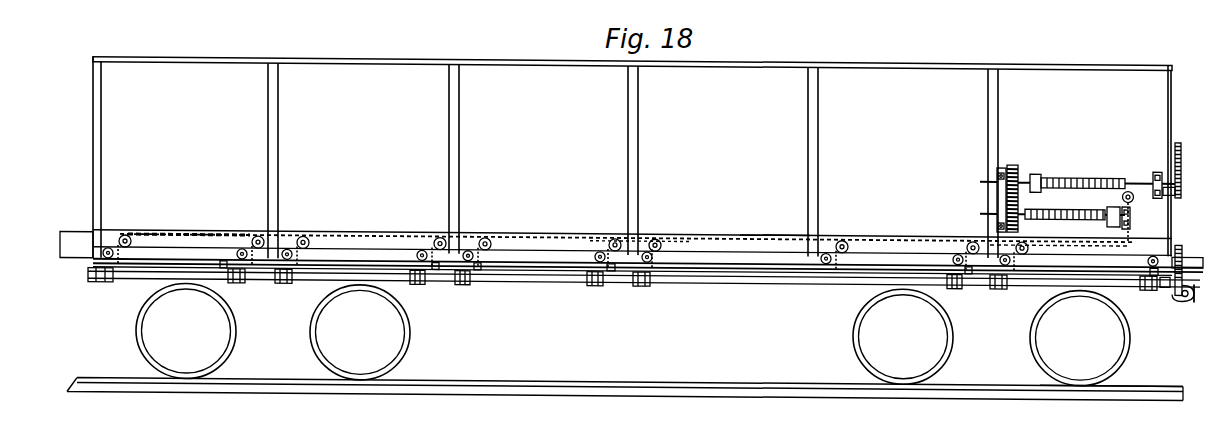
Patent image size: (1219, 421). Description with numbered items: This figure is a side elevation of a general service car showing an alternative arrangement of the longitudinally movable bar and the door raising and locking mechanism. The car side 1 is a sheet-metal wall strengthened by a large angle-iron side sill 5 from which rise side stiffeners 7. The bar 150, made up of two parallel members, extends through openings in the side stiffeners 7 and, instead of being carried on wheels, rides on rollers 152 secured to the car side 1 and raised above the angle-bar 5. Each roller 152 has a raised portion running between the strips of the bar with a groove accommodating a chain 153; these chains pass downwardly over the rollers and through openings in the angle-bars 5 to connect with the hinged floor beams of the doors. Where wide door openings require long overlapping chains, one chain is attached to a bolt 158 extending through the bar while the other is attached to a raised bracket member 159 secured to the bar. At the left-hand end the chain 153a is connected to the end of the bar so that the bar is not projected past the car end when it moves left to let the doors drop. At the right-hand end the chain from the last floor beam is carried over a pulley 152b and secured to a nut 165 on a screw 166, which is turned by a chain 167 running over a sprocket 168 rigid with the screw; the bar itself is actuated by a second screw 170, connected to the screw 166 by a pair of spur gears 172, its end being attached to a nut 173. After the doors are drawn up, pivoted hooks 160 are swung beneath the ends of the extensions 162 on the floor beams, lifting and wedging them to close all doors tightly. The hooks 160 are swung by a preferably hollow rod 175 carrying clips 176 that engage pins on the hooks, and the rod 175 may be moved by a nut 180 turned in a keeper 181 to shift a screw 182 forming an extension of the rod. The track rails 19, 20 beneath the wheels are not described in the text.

The car side 1 is at (632, 162).
The side sill angle-iron 5 is at (739, 278).
The side stiffener 7 is at (815, 152).
The track rail 19 is at (1101, 403).
The track rail 20 is at (625, 399).
The bar 150 is at (776, 231).
The roller 152 is at (610, 233).
The pulley 152b is at (1131, 183).
The chain 153 is at (315, 232).
The chain 153a is at (166, 232).
The bolt 158 is at (391, 232).
The raised bracket member 159 is at (708, 230).
The hook 160 is at (104, 276).
The extension 162 is at (122, 234).
The nut 165 is at (1037, 168).
The screw 166 is at (1075, 175).
The chain 167 is at (1181, 143).
The sprocket 168 is at (1181, 180).
The screw 170 is at (1055, 204).
The spur gears 172 is at (997, 197).
The nut 173 is at (1125, 207).
The rod 175 is at (548, 276).
The clip 176 is at (427, 282).
The nut 180 is at (1172, 290).
The keeper 181 is at (1192, 318).
The screw 182 is at (1188, 289).